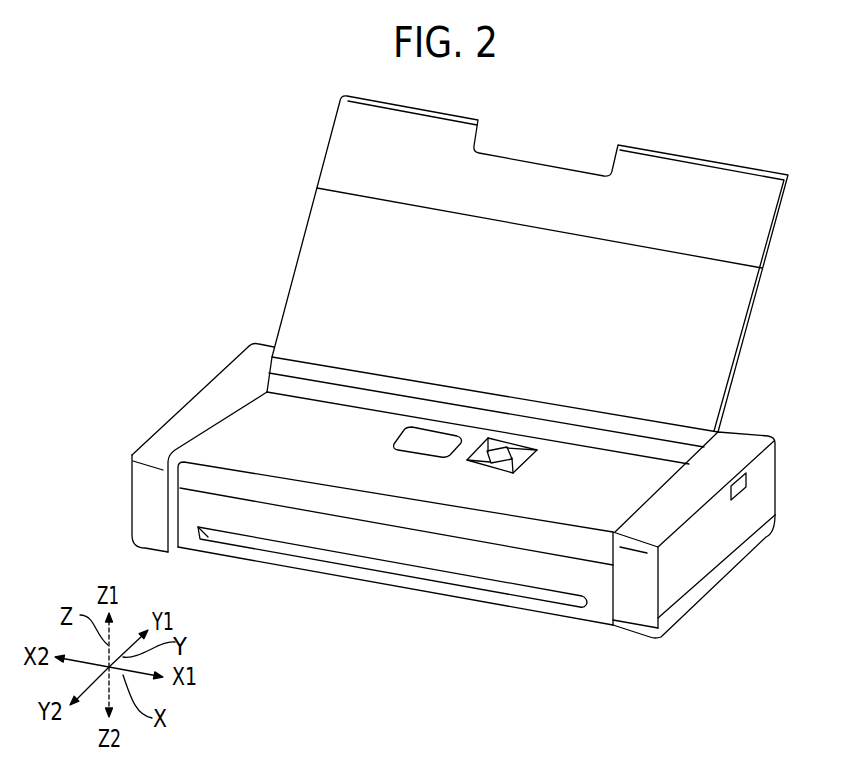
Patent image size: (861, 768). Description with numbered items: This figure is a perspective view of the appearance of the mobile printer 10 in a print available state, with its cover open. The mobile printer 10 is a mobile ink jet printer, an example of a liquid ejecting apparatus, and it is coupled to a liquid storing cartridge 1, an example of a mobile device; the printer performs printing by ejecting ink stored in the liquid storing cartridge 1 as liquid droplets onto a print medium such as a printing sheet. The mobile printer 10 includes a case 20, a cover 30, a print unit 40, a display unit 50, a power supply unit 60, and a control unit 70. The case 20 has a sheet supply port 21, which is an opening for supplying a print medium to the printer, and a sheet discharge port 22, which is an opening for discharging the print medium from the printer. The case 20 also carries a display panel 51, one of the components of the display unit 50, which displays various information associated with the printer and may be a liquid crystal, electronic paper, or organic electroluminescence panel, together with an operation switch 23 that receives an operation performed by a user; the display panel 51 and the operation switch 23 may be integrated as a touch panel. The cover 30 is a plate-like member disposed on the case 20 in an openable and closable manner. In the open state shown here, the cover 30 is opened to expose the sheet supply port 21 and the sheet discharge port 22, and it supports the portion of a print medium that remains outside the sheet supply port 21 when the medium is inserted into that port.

The liquid storing cartridge 1 is at (476, 563).
The mobile printer 10 is at (485, 395).
The case 20 is at (205, 397).
The sheet supply port 21 is at (410, 407).
The sheet discharge port 22 is at (352, 558).
The operation switch 23 is at (490, 470).
The cover 30 is at (333, 214).
The print unit 40 is at (476, 563).
The display unit 50 is at (476, 563).
The display panel 51 is at (392, 452).
The power supply unit 60 is at (476, 563).
The control unit 70 is at (512, 550).